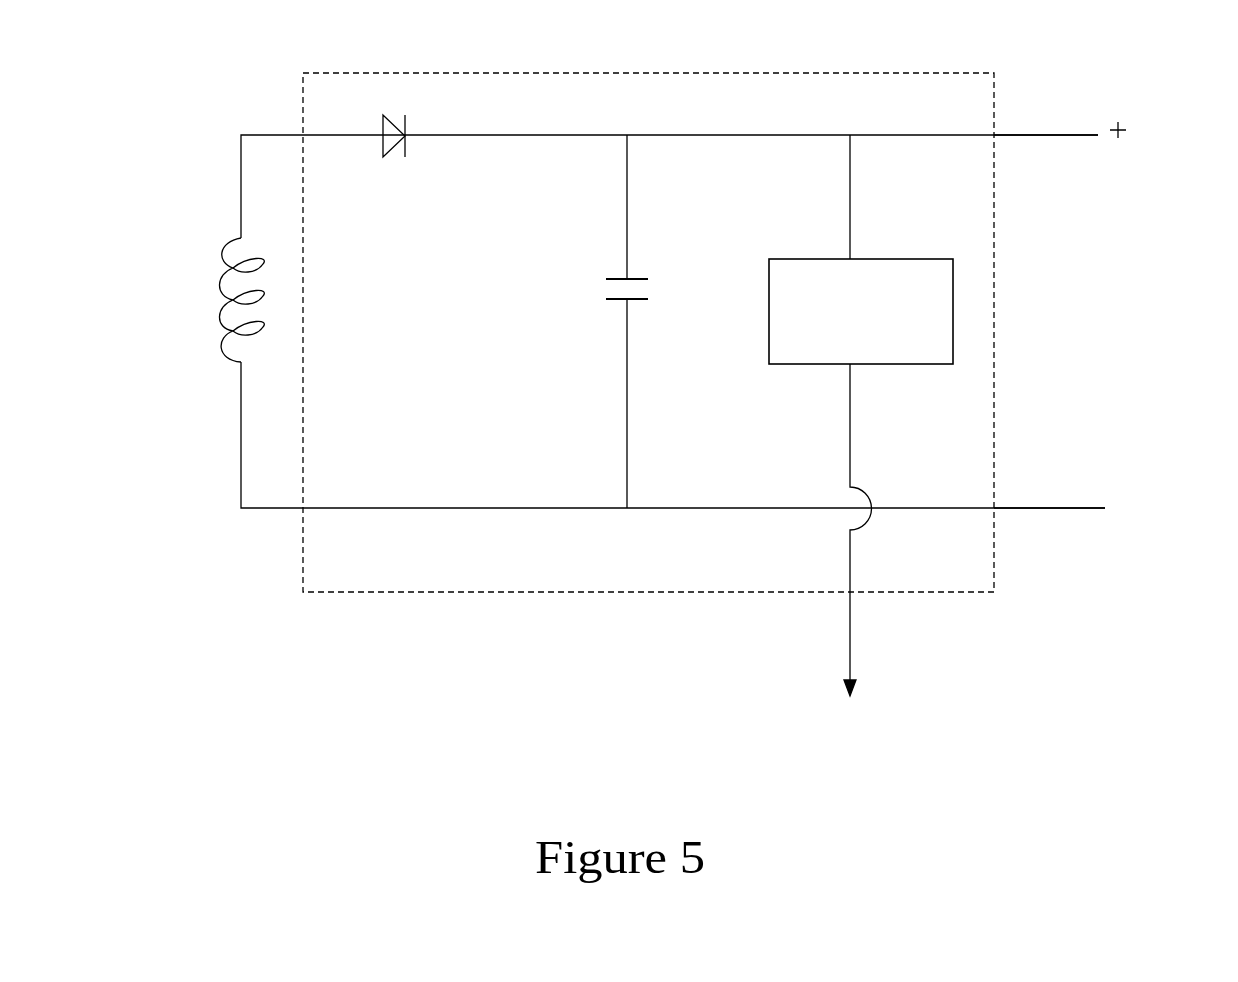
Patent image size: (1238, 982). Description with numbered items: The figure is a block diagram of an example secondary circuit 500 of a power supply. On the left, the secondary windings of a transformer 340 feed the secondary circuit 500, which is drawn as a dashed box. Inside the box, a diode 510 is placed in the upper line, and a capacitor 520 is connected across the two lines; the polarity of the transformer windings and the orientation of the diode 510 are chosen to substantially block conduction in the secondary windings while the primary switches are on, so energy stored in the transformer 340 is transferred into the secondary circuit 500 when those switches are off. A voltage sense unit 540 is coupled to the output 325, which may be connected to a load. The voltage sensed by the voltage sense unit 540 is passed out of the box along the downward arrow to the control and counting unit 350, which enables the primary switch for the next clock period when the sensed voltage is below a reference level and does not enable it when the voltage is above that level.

The transformer 340 is at (173, 300).
The secondary circuit 500 is at (648, 315).
The diode 510 is at (393, 154).
The capacitor 520 is at (601, 321).
The voltage sense unit 540 is at (861, 249).
The control and counting unit 350 is at (854, 568).
The output 325 is at (1107, 315).